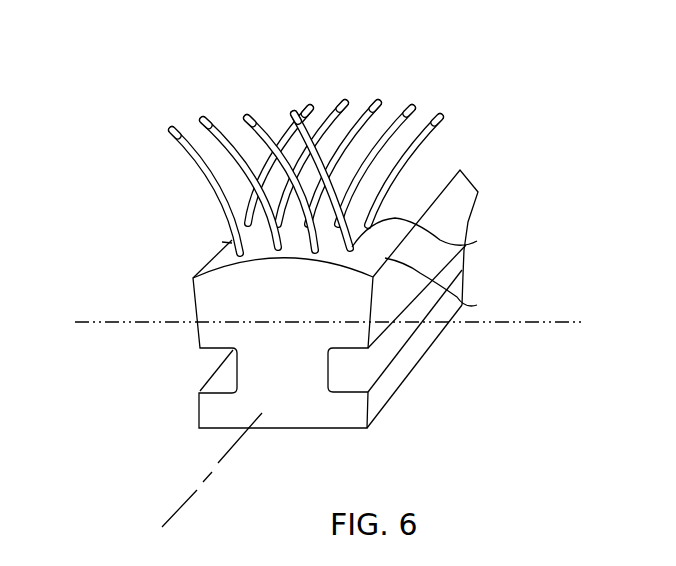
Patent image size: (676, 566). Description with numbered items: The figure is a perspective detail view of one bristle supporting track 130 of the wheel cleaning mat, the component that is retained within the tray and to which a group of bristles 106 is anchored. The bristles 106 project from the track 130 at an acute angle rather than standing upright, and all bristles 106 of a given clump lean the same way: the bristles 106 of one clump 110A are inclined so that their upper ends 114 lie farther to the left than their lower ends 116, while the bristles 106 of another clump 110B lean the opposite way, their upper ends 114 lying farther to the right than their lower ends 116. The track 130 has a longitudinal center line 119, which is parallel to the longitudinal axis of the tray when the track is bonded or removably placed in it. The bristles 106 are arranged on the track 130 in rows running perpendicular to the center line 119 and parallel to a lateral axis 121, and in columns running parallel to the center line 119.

The bristles 106 is at (241, 134).
The clump of bristles 110A is at (124, 126).
The clump of bristles 110B is at (266, 43).
The upper ends 114 is at (172, 134).
The lower ends 116 is at (222, 242).
The longitudinal center line 119 is at (178, 515).
The lateral axis 121 is at (572, 323).
The bristle supporting track 130 is at (424, 380).